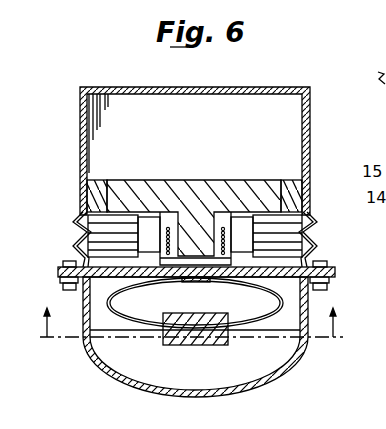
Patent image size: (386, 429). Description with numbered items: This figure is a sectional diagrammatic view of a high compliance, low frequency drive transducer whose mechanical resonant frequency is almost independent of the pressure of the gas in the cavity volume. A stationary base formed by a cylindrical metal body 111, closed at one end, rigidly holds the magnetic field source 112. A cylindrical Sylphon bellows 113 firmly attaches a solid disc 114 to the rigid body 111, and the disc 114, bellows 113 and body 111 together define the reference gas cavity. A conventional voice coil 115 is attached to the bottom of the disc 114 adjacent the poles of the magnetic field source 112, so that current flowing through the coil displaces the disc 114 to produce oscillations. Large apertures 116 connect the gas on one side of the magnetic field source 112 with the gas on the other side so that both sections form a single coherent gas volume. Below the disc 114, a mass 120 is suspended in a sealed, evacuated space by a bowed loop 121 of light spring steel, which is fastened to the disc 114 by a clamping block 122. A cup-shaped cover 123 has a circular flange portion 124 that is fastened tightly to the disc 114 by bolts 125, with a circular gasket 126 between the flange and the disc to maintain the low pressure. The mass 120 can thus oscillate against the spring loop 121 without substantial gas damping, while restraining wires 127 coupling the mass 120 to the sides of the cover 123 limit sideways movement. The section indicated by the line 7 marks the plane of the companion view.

The cylindrical metal body 111 is at (80, 135).
The magnetic field source 112 is at (197, 196).
The Sylphon bellows 113 is at (78, 238).
The solid disc 114 is at (335, 268).
The voice coil 115 is at (300, 249).
The apertures 116 is at (104, 180).
The mass 120 is at (208, 346).
The bowed loop 121 is at (270, 311).
The clamping block 122 is at (186, 280).
The cover 123 is at (288, 366).
The circular flange portion 124 is at (338, 280).
The bolts 125 is at (326, 264).
The circular gasket 126 is at (58, 275).
The restraining wires 127 is at (135, 333).
The section line 7- 7 is at (191, 326).